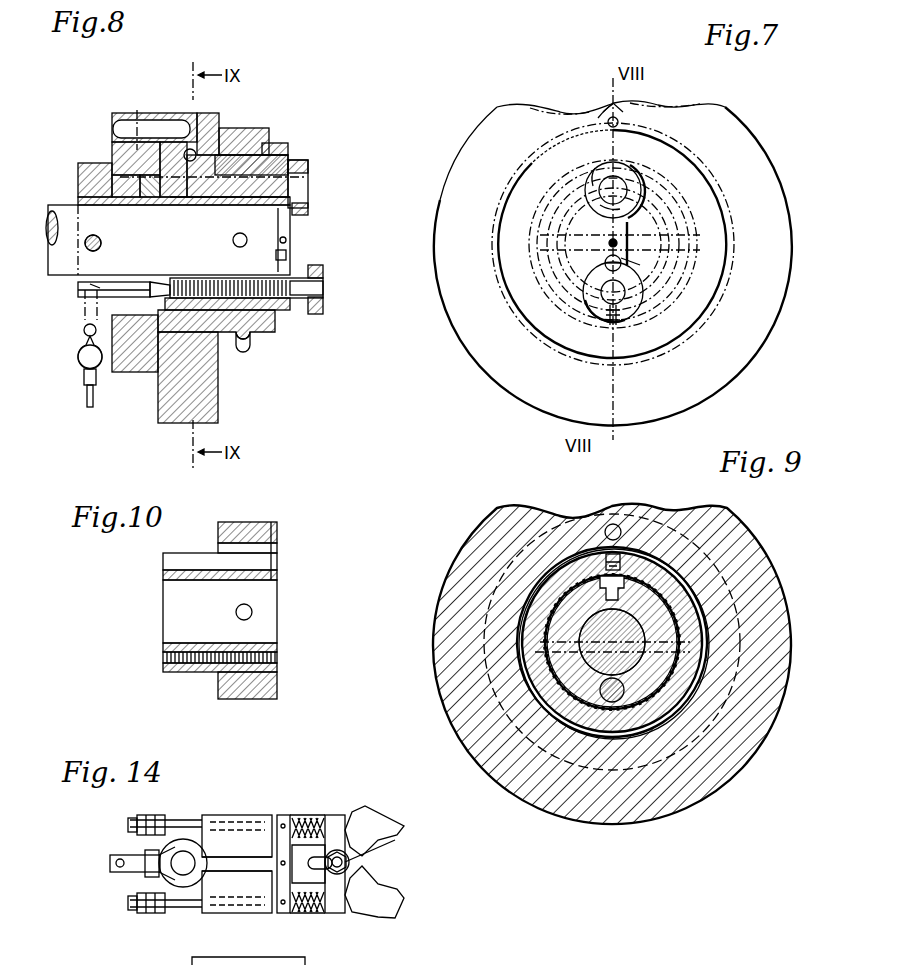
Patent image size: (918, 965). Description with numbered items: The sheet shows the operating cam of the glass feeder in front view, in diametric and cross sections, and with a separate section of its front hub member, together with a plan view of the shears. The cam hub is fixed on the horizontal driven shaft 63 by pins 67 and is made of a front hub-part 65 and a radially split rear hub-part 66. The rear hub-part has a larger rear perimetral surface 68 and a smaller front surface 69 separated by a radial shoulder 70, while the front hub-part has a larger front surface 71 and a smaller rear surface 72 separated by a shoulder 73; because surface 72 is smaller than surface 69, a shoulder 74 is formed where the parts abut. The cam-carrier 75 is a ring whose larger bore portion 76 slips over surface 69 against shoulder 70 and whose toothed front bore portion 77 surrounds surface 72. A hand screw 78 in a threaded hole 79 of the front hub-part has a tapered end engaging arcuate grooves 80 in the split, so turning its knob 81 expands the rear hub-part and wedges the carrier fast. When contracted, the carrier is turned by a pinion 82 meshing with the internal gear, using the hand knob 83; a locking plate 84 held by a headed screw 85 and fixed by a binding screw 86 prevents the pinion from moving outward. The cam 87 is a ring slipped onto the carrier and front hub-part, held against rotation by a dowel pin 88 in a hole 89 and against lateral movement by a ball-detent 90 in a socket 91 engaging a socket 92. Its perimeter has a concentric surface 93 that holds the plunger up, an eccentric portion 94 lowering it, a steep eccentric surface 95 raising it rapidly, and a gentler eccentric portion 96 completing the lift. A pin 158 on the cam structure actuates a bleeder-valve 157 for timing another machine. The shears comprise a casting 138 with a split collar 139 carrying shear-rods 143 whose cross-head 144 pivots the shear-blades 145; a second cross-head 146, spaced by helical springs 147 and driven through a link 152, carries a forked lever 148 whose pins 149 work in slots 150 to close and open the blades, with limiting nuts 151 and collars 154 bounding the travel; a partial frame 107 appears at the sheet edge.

In FIG. 8, the driven shaft 63 is at (168, 240).
In FIG. 7, the driven shaft 63 is at (603, 262).
In FIG. 9, the driven shaft 63 is at (555, 740).
In FIG. 8, the front hub-part 65 is at (275, 328).
In FIG. 7, the front hub-part 65 is at (552, 302).
In FIG. 9, the front hub-part 65 is at (660, 735).
In FIG. 10, the front hub-part 65 is at (277, 684).
In FIG. 8, the rear hub-part 66 is at (80, 163).
In FIG. 8, the pins 67 is at (100, 247).
In FIG. 7, the pins 67 is at (581, 244).
In FIG. 8, the surface of greater diameter 68 is at (83, 162).
In FIG. 8, the surface of less diameter 69 is at (140, 180).
In FIG. 8, the radial shoulder 70 is at (112, 160).
In FIG. 8, the surface of larger diameter 71 is at (270, 155).
In FIG. 10, the surface of larger diameter 71 is at (250, 700).
In FIG. 8, the surface of lesser diameter 72 is at (215, 318).
In FIG. 10, the surface of lesser diameter 72 is at (195, 672).
In FIG. 8, the shoulder 73 is at (250, 335).
In FIG. 10, the shoulder 73 is at (218, 695).
In FIG. 8, the shoulder 74 is at (78, 201).
In FIG. 10, the shoulder 74 is at (163, 575).
In FIG. 8, the cam-carrier 75 is at (140, 372).
In FIG. 9, the cam-carrier 75 is at (595, 760).
In FIG. 8, the portion of greater diameter 76 is at (135, 300).
In FIG. 8, the front portion of bore 77 is at (175, 205).
In FIG. 9, the front portion of bore 77 is at (612, 720).
In FIG. 8, the hand screw 78 is at (323, 290).
In FIG. 7, the hand screw 78 is at (628, 305).
In FIG. 9, the hand screw 78 is at (640, 720).
In FIG. 8, the threaded hole 79 is at (280, 300).
In FIG. 8, the arcuate grooves 80 is at (78, 290).
In FIG. 8, the knob 81 is at (323, 303).
In FIG. 7, the knob 81 is at (600, 320).
In FIG. 8, the pinion 82 is at (308, 185).
In FIG. 7, the pinion 82 is at (592, 172).
In FIG. 9, the pinion 82 is at (590, 560).
In FIG. 8, the hand knob 83 is at (308, 210).
In FIG. 7, the hand knob 83 is at (621, 181).
In FIG. 8, the locking plate 84 is at (281, 225).
In FIG. 7, the locking plate 84 is at (605, 218).
In FIG. 8, the headed screw 85 is at (287, 240).
In FIG. 7, the headed screw 85 is at (606, 243).
In FIG. 8, the binding screw 86 is at (287, 255).
In FIG. 7, the binding screw 86 is at (641, 265).
In FIG. 8, the cam 87 is at (219, 118).
In FIG. 7, the cam 87 is at (535, 243).
In FIG. 9, the cam 87 is at (485, 527).
In FIG. 8, the dowel pin 88 is at (154, 130).
In FIG. 7, the dowel pin 88 is at (620, 120).
In FIG. 8, the hole 89 is at (262, 118).
In FIG. 9, the hole 89 is at (614, 552).
In FIG. 8, the ball-detent 90 is at (245, 160).
In FIG. 9, the ball-detent 90 is at (640, 522).
In FIG. 8, the socket 91 is at (275, 150).
In FIG. 8, the socket 92 is at (192, 149).
In FIG. 7, the concentric perimetral surface 93 is at (462, 155).
In FIG. 9, the concentric perimetral surface 93 is at (478, 548).
In FIG. 7, the eccentric portion 94 is at (548, 112).
In FIG. 9, the eccentric portion 94 is at (545, 512).
In FIG. 7, the second eccentric surface 95 is at (602, 113).
In FIG. 9, the second eccentric surface 95 is at (612, 522).
In FIG. 7, the eccentric portion 96 is at (670, 110).
In FIG. 9, the eccentric portion 96 is at (688, 514).
In FIG. 14, the frame 107 is at (277, 958).
In FIG. 14, the plate or casting 138 is at (237, 836).
In FIG. 14, the split collar 139 is at (237, 885).
In FIG. 14, the shear-rods 143 is at (190, 817).
In FIG. 14, the cross-head 144 is at (340, 845).
In FIG. 14, the shear-blades 145 is at (370, 855).
In FIG. 14, the second cross-head 146 is at (290, 820).
In FIG. 14, the helical springs 147 is at (318, 815).
In FIG. 14, the forked lever 148 is at (343, 900).
In FIG. 14, the pins 149 is at (370, 872).
In FIG. 14, the slots 150 is at (342, 855).
In FIG. 14, the limiting nuts 151 is at (148, 815).
In FIG. 14, the link 152 is at (118, 852).
In FIG. 14, the collars 154 is at (280, 815).
In FIG. 8, the bleeder-valve 157 is at (78, 360).
In FIG. 8, the pin 158 is at (84, 332).